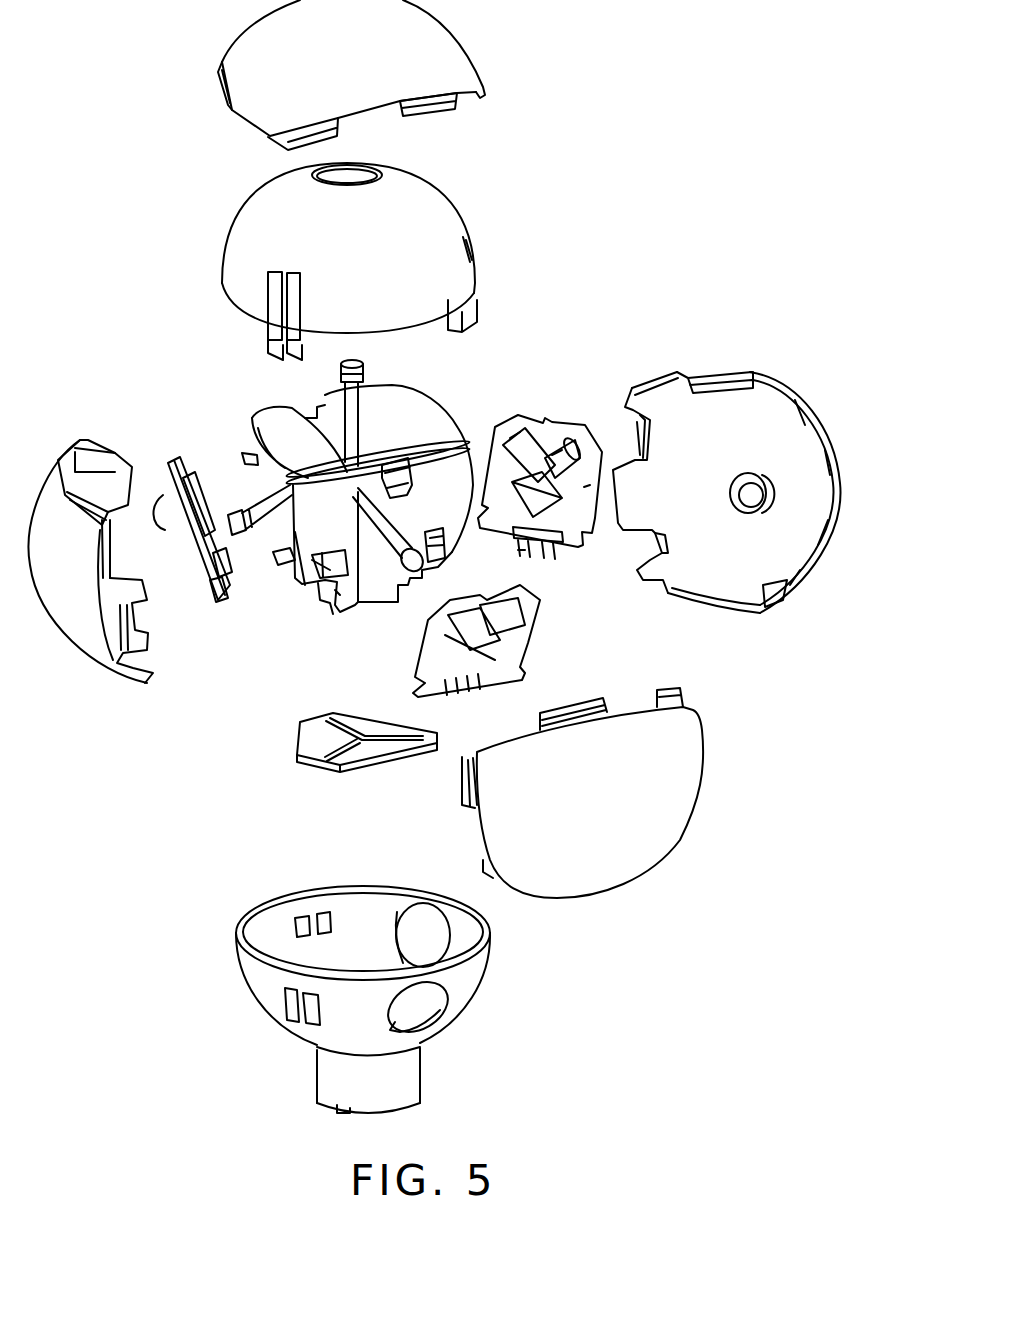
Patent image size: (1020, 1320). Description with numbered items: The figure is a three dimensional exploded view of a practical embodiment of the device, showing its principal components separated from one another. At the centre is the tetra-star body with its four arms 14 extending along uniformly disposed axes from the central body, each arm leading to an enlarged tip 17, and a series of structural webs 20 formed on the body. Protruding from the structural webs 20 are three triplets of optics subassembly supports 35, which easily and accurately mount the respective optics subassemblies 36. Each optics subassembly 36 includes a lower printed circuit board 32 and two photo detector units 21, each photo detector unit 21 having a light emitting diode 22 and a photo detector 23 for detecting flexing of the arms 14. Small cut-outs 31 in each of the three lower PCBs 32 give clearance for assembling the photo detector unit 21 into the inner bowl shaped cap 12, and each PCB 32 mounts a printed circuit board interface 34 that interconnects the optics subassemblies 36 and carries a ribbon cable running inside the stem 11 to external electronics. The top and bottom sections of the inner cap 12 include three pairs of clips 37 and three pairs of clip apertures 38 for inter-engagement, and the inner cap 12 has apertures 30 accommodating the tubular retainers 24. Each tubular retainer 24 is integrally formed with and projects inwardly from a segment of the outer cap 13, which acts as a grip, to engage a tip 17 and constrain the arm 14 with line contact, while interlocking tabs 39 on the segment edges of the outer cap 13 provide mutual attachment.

The stem 11 is at (408, 1075).
The inner cap 12 is at (278, 240).
The outer cap 13 is at (710, 410).
The arm 14 is at (355, 402).
The tip 17 is at (341, 377).
The structural web 20 is at (285, 428).
The photo detector unit 21 is at (518, 437).
The light emitting diode 22 is at (586, 487).
The photo detector 23 is at (522, 553).
The tubular retainer 24 is at (773, 503).
The aperture 30 is at (447, 925).
The cut-out 31 is at (556, 452).
The printed circuit board 32 is at (226, 598).
The printed circuit board interface 34 is at (458, 707).
The optics subassembly support 35 is at (430, 453).
The optics subassembly 36 is at (168, 445).
The clip 37 is at (477, 300).
The clip aperture 38 is at (297, 920).
The interlocking tab 39 is at (430, 115).